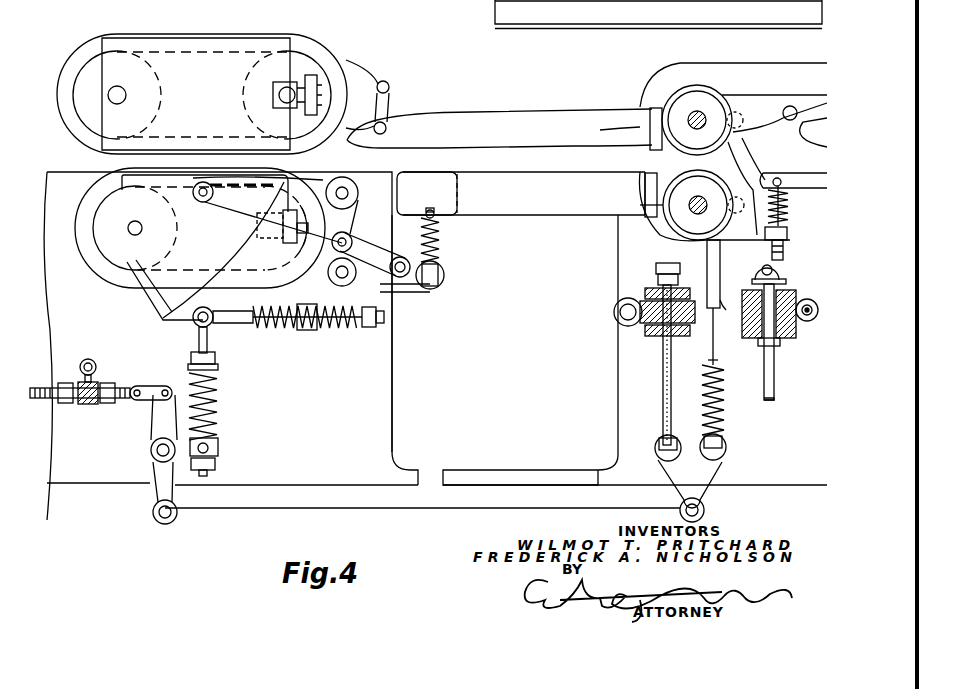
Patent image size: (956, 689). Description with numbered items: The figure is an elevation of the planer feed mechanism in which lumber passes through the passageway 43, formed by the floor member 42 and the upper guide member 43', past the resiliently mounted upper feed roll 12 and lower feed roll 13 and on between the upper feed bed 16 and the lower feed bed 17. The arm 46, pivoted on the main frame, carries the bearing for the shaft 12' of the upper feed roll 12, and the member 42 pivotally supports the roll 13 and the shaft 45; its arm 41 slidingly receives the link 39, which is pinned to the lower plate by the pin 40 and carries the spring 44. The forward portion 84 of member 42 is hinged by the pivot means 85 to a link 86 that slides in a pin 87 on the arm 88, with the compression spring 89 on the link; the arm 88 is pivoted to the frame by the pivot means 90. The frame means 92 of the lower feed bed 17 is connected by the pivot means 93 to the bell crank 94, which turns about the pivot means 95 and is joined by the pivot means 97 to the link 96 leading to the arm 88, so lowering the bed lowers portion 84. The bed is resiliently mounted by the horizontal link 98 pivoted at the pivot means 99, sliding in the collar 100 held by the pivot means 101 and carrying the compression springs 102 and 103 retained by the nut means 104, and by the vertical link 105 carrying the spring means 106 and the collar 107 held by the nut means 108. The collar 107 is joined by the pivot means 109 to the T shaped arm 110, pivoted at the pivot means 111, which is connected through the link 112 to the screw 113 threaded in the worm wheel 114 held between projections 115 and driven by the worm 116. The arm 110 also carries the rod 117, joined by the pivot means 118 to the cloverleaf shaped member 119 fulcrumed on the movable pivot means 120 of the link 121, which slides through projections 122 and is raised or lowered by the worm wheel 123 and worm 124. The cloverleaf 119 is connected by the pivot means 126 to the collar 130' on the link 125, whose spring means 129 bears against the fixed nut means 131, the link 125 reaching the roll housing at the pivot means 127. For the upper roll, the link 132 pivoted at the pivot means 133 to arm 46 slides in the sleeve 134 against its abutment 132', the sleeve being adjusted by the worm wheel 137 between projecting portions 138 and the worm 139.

The upper feed roll 12 is at (709, 113).
The shaft of the upper feed roll 12' is at (701, 97).
The lower feed roll 13 is at (673, 178).
The upper feed bed 16 is at (85, 39).
The lower feed bed 17 is at (77, 194).
The link 39 is at (785, 258).
The pin 40 is at (790, 206).
The arm 41 is at (788, 235).
The member 42 is at (518, 328).
The passageway 43 is at (504, 128).
The upper guide member 43' is at (620, 106).
The spring 44 is at (787, 221).
The shaft 45 is at (660, 206).
The arm 46 is at (765, 102).
The portion of member 42 84 is at (418, 187).
The pivot means 85 is at (437, 217).
The link 86 is at (440, 231).
The pin 87 is at (445, 277).
The arm 88 is at (410, 293).
The compression spring 89 is at (404, 252).
The pivot means 90 is at (342, 286).
The frame means 92 is at (152, 298).
The pivot means 93 is at (206, 184).
The bell crank 94 is at (285, 184).
The pivot means 95 is at (351, 192).
The link 96 is at (353, 242).
The pivot means 97 is at (351, 233).
The link 98 is at (224, 326).
The pivot means 99 is at (196, 326).
The collar 100 is at (307, 332).
The pivot means 101 is at (322, 330).
The compression spring 102 is at (275, 329).
The compression spring 103 is at (362, 331).
The nut means 104 is at (230, 310).
The link 105 is at (213, 342).
The spring means 106 is at (220, 420).
The collar 107 is at (212, 448).
The nut means 108 is at (218, 358).
The pivot means 109 is at (220, 456).
The T shaped arm 110 is at (150, 472).
The pivot means 111 is at (152, 448).
The link 112 is at (152, 386).
The screw 113 is at (119, 386).
The worm wheel 114 is at (90, 405).
The projections 115 is at (66, 404).
The worm 116 is at (88, 359).
The rod 117 is at (364, 504).
The pivot means 118 is at (705, 512).
The cloverleaf shaped member 119 is at (712, 487).
The movable pivot means 120 is at (660, 454).
The link 121 is at (665, 387).
The projections 122 is at (680, 339).
The worm wheel 123 is at (678, 303).
The worm 124 is at (620, 307).
The link 125 is at (722, 354).
The pivot means 126 is at (736, 429).
The pivot means 127 is at (721, 300).
The spring means 129 is at (724, 381).
The collar 130' is at (743, 443).
The nut means 131 is at (775, 369).
The link 132 is at (791, 395).
The abutment 132' is at (797, 276).
The pivot means 133 is at (738, 317).
The sleeve 134 is at (781, 353).
The worm wheel 137 is at (726, 306).
The projecting portions 138 is at (801, 306).
The worm 139 is at (797, 328).